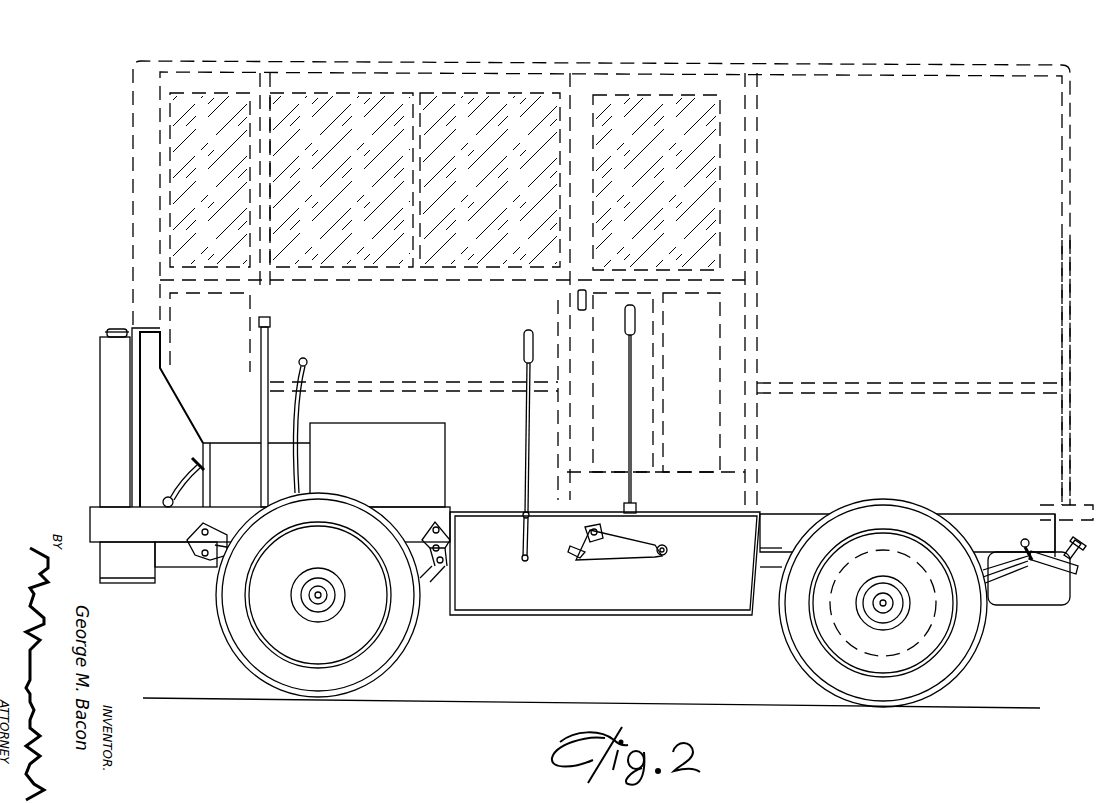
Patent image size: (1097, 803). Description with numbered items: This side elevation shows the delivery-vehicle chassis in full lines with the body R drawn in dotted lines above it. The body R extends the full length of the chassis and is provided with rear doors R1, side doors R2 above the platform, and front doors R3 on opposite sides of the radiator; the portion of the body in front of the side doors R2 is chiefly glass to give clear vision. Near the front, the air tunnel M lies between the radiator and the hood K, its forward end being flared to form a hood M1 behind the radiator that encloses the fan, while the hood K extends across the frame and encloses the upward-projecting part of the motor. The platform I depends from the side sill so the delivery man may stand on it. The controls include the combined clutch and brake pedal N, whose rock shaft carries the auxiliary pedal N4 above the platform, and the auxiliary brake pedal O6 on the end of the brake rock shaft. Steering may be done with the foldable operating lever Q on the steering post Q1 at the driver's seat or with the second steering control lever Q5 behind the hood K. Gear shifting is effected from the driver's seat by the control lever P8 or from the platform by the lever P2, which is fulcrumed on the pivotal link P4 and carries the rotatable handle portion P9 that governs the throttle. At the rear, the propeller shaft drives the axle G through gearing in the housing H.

The body R is at (613, 290).
The rear doors R1 is at (1070, 280).
The side doors R2 is at (707, 230).
The front doors R3 is at (187, 180).
The hood K is at (357, 422).
The air tunnel M is at (238, 456).
The hood M1 is at (156, 390).
The combined clutch and brake operating pedal N is at (177, 472).
The auxiliary operating pedal N4 is at (598, 527).
The foldable operating lever Q is at (270, 323).
The steering post Q1 is at (270, 350).
The second steering control lever Q5 is at (635, 377).
The universally rockable control lever P8 is at (311, 364).
The handle portion P9 is at (522, 342).
The lever P2 is at (522, 427).
The pivotal link P4 is at (524, 561).
The auxiliary operating pedal O6 is at (580, 565).
The platform I is at (647, 615).
The axle G is at (945, 620).
The housing H is at (975, 655).